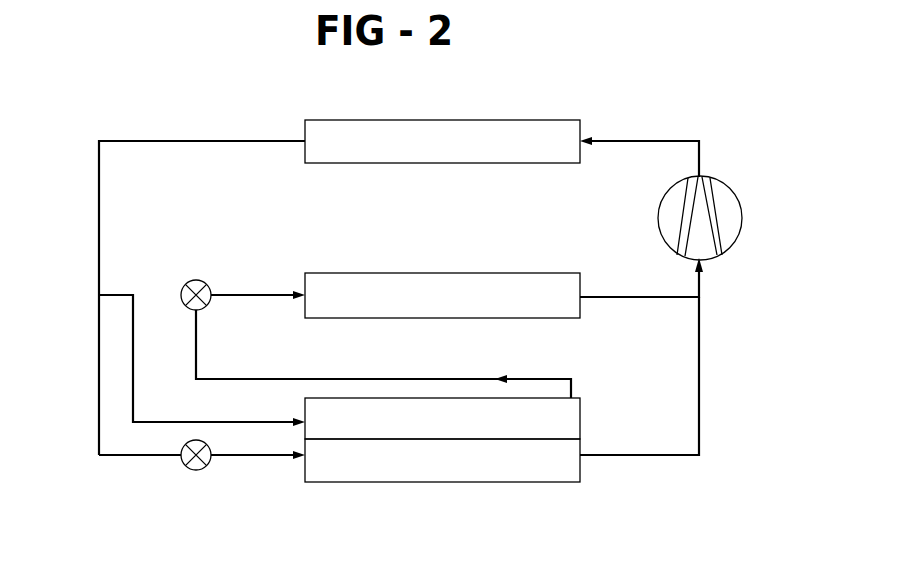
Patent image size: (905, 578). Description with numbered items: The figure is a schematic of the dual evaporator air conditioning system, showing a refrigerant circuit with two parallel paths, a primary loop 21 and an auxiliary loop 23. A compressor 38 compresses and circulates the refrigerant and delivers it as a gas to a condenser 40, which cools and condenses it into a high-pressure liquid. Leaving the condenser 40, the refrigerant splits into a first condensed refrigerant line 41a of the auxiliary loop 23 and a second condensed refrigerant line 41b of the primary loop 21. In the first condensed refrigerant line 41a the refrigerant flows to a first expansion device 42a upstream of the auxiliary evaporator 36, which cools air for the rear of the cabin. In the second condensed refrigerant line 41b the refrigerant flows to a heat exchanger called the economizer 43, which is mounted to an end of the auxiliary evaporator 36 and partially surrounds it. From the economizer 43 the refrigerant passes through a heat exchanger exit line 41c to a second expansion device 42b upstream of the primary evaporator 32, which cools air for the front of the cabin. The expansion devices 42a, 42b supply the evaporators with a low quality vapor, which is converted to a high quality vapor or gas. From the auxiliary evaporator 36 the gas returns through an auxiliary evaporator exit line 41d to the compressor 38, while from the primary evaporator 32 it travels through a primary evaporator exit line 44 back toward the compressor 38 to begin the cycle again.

The primary loop 21 is at (124, 275).
The auxiliary loop 23 is at (122, 498).
The primary evaporator 32 is at (540, 273).
The auxiliary evaporator 36 is at (575, 482).
The compressor 38 is at (737, 200).
The condenser 40 is at (548, 120).
The first condensed refrigerant line 41a is at (99, 390).
The second condensed refrigerant line 41b is at (133, 395).
The heat exchanger exit line 41c is at (250, 379).
The auxiliary evaporator exit line 41d is at (700, 397).
The first expansion device 42a is at (205, 468).
The second expansion device 42b is at (186, 308).
The economizer 43 is at (582, 422).
The primary evaporator exit line 44 is at (655, 300).